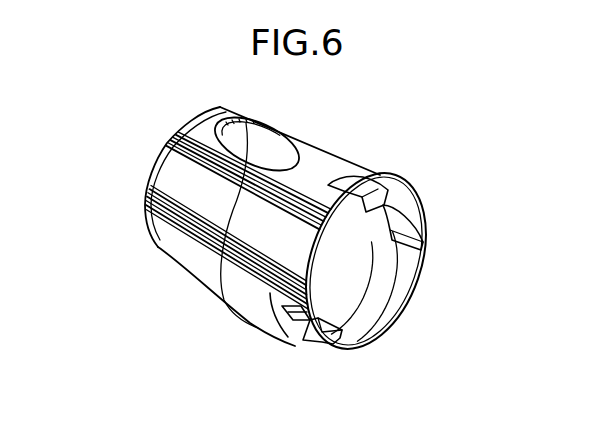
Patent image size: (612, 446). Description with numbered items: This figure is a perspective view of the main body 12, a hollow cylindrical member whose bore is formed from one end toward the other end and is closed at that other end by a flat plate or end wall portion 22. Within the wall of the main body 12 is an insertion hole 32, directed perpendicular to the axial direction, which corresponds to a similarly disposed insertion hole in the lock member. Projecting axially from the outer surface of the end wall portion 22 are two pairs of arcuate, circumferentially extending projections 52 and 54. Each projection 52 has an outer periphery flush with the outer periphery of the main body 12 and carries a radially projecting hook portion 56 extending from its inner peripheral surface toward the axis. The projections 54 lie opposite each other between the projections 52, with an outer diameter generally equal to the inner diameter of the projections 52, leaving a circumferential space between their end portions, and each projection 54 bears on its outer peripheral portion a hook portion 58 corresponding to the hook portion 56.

The main body 12 is at (332, 157).
The insertion hole 32 is at (281, 131).
The arcuate projection 52 is at (319, 257).
The end wall portion 22 is at (373, 250).
The hook portion 56 is at (383, 310).
The hook portion 58 is at (384, 183).
The arcuate projection 54 is at (405, 215).